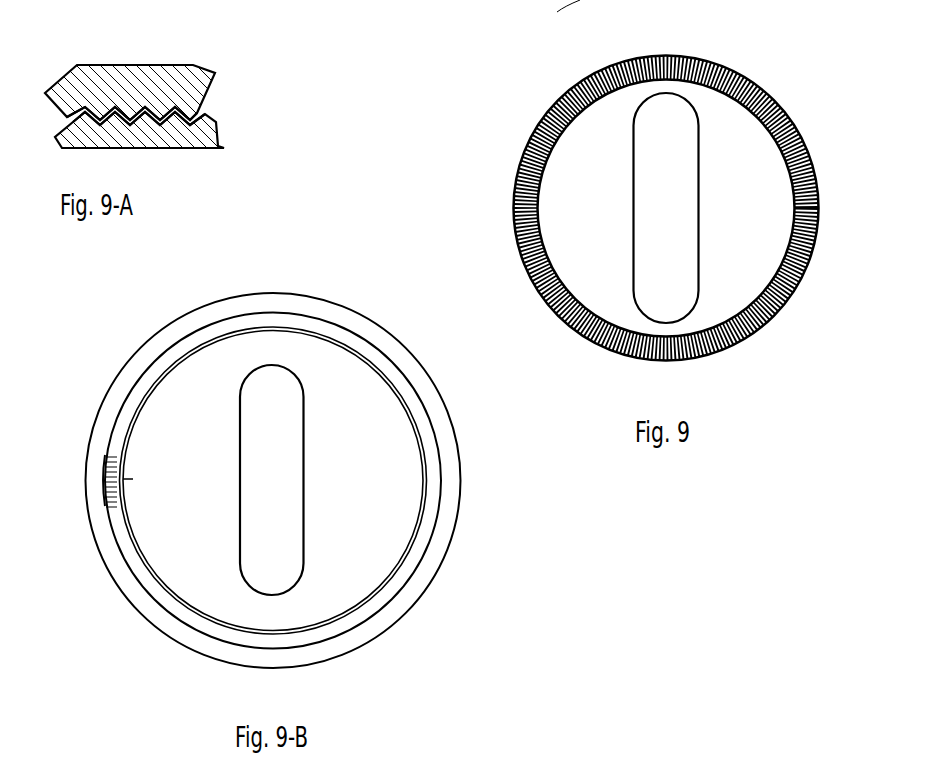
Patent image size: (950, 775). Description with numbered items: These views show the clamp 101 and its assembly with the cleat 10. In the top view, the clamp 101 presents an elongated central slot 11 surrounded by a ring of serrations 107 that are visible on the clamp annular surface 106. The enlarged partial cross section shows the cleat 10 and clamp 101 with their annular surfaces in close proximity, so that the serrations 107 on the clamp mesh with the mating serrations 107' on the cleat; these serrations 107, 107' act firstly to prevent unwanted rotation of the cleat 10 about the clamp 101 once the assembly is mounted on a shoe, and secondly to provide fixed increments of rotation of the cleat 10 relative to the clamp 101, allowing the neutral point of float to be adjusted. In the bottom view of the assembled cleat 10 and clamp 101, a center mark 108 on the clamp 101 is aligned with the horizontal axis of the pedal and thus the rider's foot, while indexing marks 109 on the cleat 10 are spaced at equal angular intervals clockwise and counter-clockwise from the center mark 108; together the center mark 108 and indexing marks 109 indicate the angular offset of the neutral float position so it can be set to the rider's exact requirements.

In FIG. 9-A, the cleat 10 is at (152, 82).
In FIG. 9-B, the cleat 10 is at (413, 585).
In FIG. 9, the slot 11 is at (633, 300).
In FIG. 9-B, the slot 11 is at (305, 500).
In FIG. 9-A, the clamp 101 is at (147, 138).
In FIG. 9, the clamp 101 is at (600, 142).
In FIG. 9-B, the clamp 101 is at (365, 471).
In FIG. 9, the clamp annular surface 106 is at (518, 255).
In FIG. 9-A, the serrations 107 is at (179, 130).
In FIG. 9, the serrations 107 is at (682, 202).
In FIG. 9-A, the serrations 107' is at (177, 89).
In FIG. 9-B, the center mark 108 is at (128, 479).
In FIG. 9-B, the indexing marks 109 is at (107, 510).